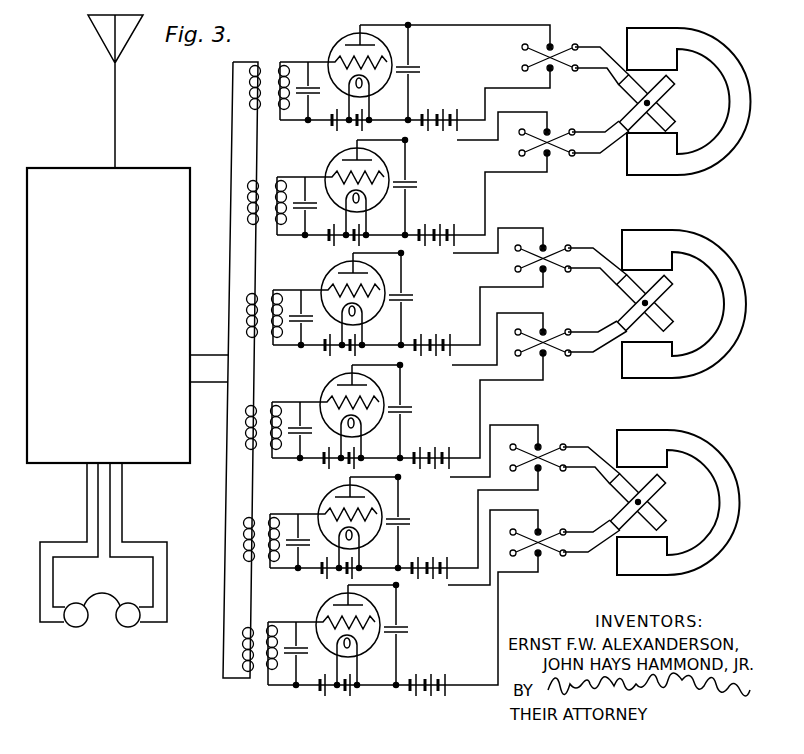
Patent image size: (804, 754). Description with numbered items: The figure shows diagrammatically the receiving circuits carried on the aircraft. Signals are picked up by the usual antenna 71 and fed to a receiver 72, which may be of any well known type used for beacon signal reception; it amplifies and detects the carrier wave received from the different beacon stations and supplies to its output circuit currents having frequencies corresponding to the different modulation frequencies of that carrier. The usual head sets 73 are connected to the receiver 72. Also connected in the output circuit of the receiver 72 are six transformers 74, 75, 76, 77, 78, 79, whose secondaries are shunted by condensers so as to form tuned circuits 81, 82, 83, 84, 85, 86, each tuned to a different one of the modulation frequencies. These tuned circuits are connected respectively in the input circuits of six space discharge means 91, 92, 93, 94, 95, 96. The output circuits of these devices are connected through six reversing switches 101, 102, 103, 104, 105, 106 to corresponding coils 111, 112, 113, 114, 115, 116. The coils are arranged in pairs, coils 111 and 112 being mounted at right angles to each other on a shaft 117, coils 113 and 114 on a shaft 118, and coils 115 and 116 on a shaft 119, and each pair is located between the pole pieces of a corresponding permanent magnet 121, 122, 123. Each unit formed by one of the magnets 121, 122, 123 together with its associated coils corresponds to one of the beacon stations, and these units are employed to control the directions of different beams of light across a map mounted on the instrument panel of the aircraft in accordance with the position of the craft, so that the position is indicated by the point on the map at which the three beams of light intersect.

The antenna 71 is at (113, 67).
The receiver 72 is at (85, 168).
The head sets 73 is at (101, 590).
The transformer 74 is at (289, 82).
The transformer 75 is at (287, 195).
The transformer 76 is at (284, 308).
The transformer 77 is at (283, 420).
The transformer 78 is at (281, 530).
The transformer 79 is at (280, 644).
The tuned circuit 81 is at (304, 84).
The tuned circuit 82 is at (302, 198).
The tuned circuit 83 is at (300, 310).
The tuned circuit 84 is at (300, 424).
The tuned circuit 85 is at (298, 534).
The tuned circuit 86 is at (295, 642).
The space discharge means 91 is at (344, 38).
The space discharge means 92 is at (342, 161).
The space discharge means 93 is at (336, 271).
The space discharge means 94 is at (335, 384).
The space discharge means 95 is at (333, 494).
The space discharge means 96 is at (330, 606).
The reversing switch 101 is at (518, 71).
The reversing switch 102 is at (543, 171).
The reversing switch 103 is at (540, 286).
The reversing switch 104 is at (539, 385).
The reversing switch 105 is at (535, 496).
The reversing switch 106 is at (534, 597).
The coil 111 is at (673, 126).
The coil 112 is at (674, 84).
The coil 113 is at (671, 326).
The coil 114 is at (672, 284).
The coil 115 is at (664, 525).
The coil 116 is at (665, 483).
The shaft 117 is at (655, 105).
The shaft 118 is at (653, 305).
The shaft 119 is at (646, 503).
The permanent magnet 121 is at (730, 58).
The permanent magnet 122 is at (725, 260).
The permanent magnet 123 is at (718, 460).